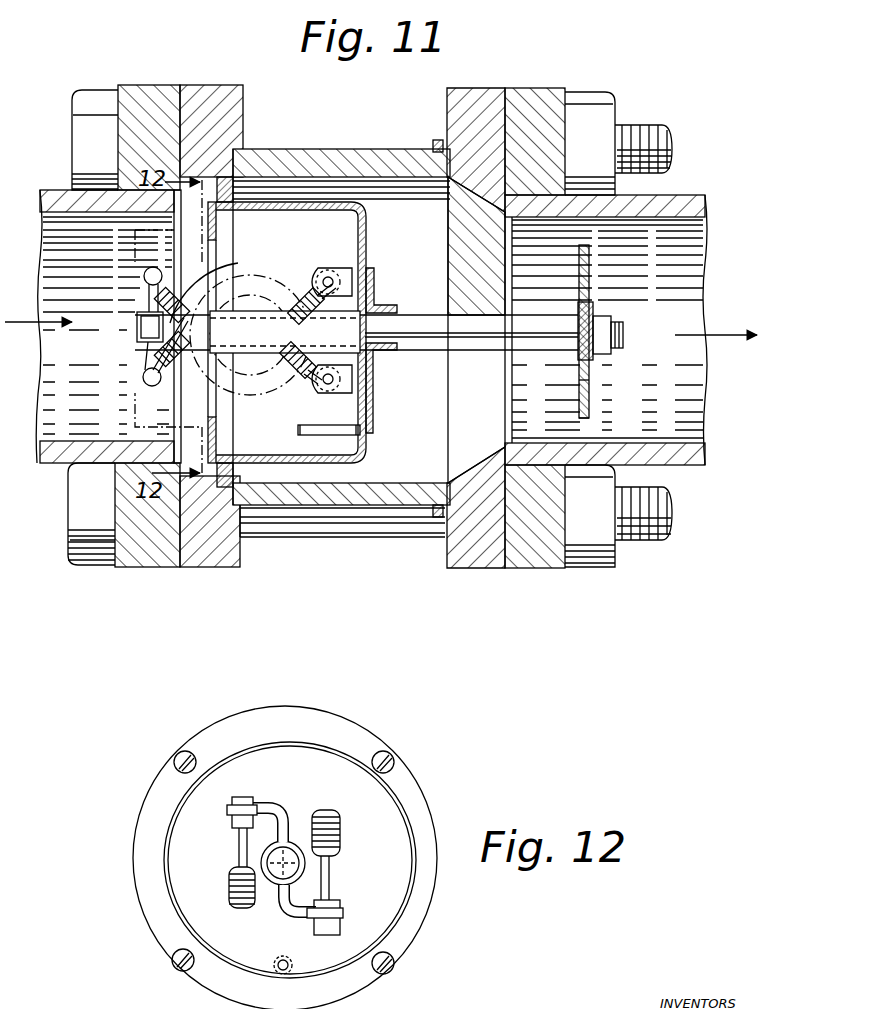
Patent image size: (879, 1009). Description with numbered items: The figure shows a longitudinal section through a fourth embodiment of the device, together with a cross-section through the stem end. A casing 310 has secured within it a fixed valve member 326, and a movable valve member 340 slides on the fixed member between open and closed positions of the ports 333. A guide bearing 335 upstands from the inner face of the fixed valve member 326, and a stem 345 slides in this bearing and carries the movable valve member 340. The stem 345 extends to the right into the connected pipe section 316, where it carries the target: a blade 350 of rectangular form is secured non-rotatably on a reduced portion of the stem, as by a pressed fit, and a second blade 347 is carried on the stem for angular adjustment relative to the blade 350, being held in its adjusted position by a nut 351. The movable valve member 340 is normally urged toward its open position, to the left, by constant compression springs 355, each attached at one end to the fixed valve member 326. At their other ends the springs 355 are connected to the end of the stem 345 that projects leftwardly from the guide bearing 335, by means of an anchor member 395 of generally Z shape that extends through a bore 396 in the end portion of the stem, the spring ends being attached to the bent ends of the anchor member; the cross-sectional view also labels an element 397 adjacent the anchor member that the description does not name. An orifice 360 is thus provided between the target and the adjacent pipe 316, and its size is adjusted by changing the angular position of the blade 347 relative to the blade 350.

In FIG. 11, the casing 310 is at (388, 507).
In FIG. 11, the pipe section 316 is at (697, 468).
In FIG. 11, the fixed valve member 326 is at (278, 437).
In FIG. 11, the ports 333 is at (332, 222).
In FIG. 11, the guide bearing 335 is at (276, 290).
In FIG. 12, the guide bearing 335 is at (276, 884).
In FIG. 11, the movable valve member 340 is at (288, 463).
In FIG. 11, the stem 345 is at (427, 337).
In FIG. 11, the second blade 347 is at (592, 308).
In FIG. 11, the blade 350 is at (579, 402).
In FIG. 11, the nut 351 is at (600, 356).
In FIG. 11, the constant compression springs 355 is at (310, 292).
In FIG. 12, the constant compression springs 355 is at (230, 896).
In FIG. 11, the orifice 360 is at (582, 428).
In FIG. 11, the anchor member 395 is at (146, 294).
In FIG. 12, the anchor member 395 is at (298, 826).
In FIG. 12, the bore 396 is at (308, 873).
In FIG. 12, the tube 397 is at (263, 810).